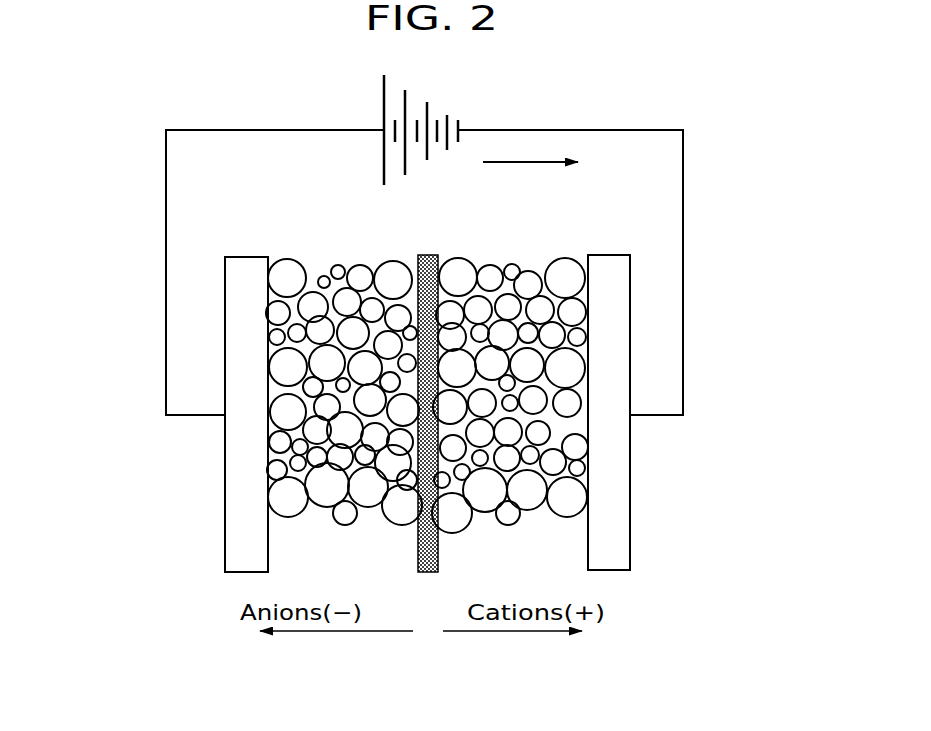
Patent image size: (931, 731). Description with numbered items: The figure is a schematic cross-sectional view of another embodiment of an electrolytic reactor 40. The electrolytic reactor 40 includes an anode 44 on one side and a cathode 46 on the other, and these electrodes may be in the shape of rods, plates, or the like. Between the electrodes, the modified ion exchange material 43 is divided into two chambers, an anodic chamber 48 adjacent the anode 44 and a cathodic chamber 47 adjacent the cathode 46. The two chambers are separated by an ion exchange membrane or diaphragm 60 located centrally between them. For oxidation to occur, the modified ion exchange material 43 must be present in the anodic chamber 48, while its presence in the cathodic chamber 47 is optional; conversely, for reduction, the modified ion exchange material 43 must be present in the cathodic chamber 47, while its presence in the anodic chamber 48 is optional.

The electrolytic reactor 40 is at (725, 305).
The modified ion exchange material 43 is at (322, 497).
The anode 44 is at (245, 520).
The cathode 46 is at (603, 518).
The cathodic chamber 47 is at (522, 250).
The anodic chamber 48 is at (322, 252).
The ion exchange membrane or diaphragm 60 is at (430, 572).